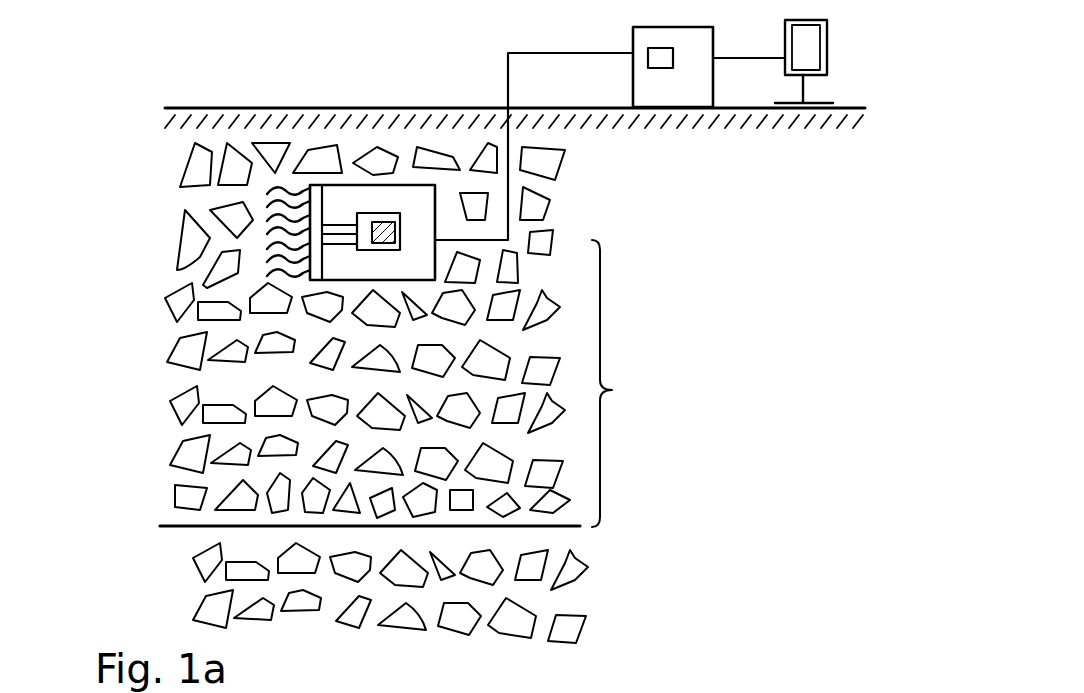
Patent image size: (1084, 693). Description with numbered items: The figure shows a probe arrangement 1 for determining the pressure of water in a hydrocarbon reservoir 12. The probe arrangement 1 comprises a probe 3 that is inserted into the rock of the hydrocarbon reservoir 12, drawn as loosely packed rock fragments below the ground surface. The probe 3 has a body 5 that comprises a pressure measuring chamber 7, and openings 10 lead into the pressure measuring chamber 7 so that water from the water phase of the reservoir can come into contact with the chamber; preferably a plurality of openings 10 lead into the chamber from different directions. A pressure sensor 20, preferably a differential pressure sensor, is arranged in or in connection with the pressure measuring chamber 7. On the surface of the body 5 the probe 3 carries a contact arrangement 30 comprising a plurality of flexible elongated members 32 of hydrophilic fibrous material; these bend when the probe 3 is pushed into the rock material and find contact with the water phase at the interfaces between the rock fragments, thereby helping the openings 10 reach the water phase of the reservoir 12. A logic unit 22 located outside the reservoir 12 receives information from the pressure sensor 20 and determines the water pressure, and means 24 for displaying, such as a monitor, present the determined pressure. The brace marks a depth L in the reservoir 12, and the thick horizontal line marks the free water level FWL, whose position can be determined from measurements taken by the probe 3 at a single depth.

The probe arrangement 1 is at (128, 57).
The probe 3 is at (349, 146).
The body 5 is at (351, 200).
The pressure measuring chamber 7 is at (367, 227).
The openings 10 is at (337, 226).
The hydrocarbon reservoir 12 is at (140, 354).
The pressure sensor 20 is at (405, 226).
The logic unit 22 is at (667, 67).
The means for displaying 24 is at (808, 95).
The contact arrangement 30 is at (277, 170).
The flexible elongated members 32 is at (272, 222).
The depth L is at (620, 383).
The free water level FWL is at (565, 530).